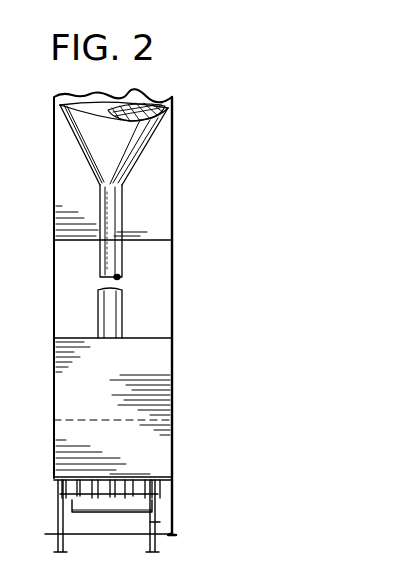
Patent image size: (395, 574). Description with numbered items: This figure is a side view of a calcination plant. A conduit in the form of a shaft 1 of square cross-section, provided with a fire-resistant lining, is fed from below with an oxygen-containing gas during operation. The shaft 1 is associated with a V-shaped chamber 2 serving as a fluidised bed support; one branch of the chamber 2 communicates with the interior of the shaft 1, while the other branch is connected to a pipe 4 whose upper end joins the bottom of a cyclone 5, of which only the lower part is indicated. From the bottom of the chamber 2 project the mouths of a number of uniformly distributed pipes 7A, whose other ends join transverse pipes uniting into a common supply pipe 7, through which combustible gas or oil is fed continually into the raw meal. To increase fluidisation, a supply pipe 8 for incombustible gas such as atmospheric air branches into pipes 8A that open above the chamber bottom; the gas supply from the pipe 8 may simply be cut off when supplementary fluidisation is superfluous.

The shaft 1 is at (158, 175).
The V-shaped chamber 2 is at (155, 365).
The pipe 4 is at (117, 210).
The cyclone 5 is at (140, 134).
The common supply pipe 7 is at (58, 527).
The pipes 7A is at (95, 484).
The supply pipe 8 is at (165, 525).
The pipes 8A is at (135, 505).